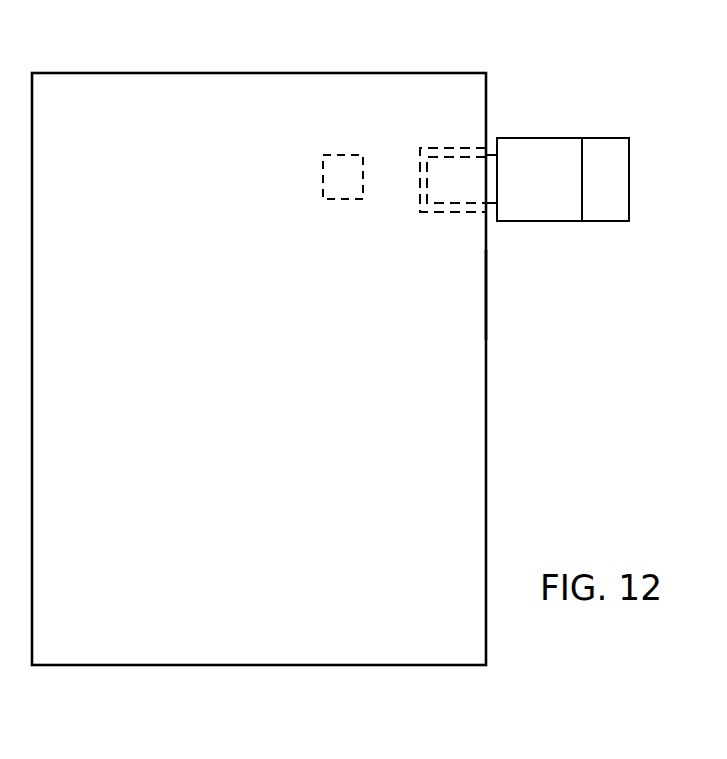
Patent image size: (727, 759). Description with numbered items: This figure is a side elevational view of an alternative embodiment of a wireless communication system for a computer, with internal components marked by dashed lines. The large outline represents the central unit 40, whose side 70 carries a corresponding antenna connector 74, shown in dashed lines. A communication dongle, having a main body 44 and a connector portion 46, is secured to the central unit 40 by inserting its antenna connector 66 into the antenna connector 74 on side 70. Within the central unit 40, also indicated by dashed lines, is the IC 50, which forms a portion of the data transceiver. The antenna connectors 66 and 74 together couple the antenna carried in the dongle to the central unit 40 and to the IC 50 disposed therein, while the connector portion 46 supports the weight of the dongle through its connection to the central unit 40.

The central unit 40 is at (253, 55).
The main body 44 is at (572, 165).
The connector portion 46 is at (495, 203).
The IC 50 is at (330, 173).
The antenna connector 66 is at (458, 175).
The side 70 is at (487, 310).
The antenna connector 74 is at (430, 145).